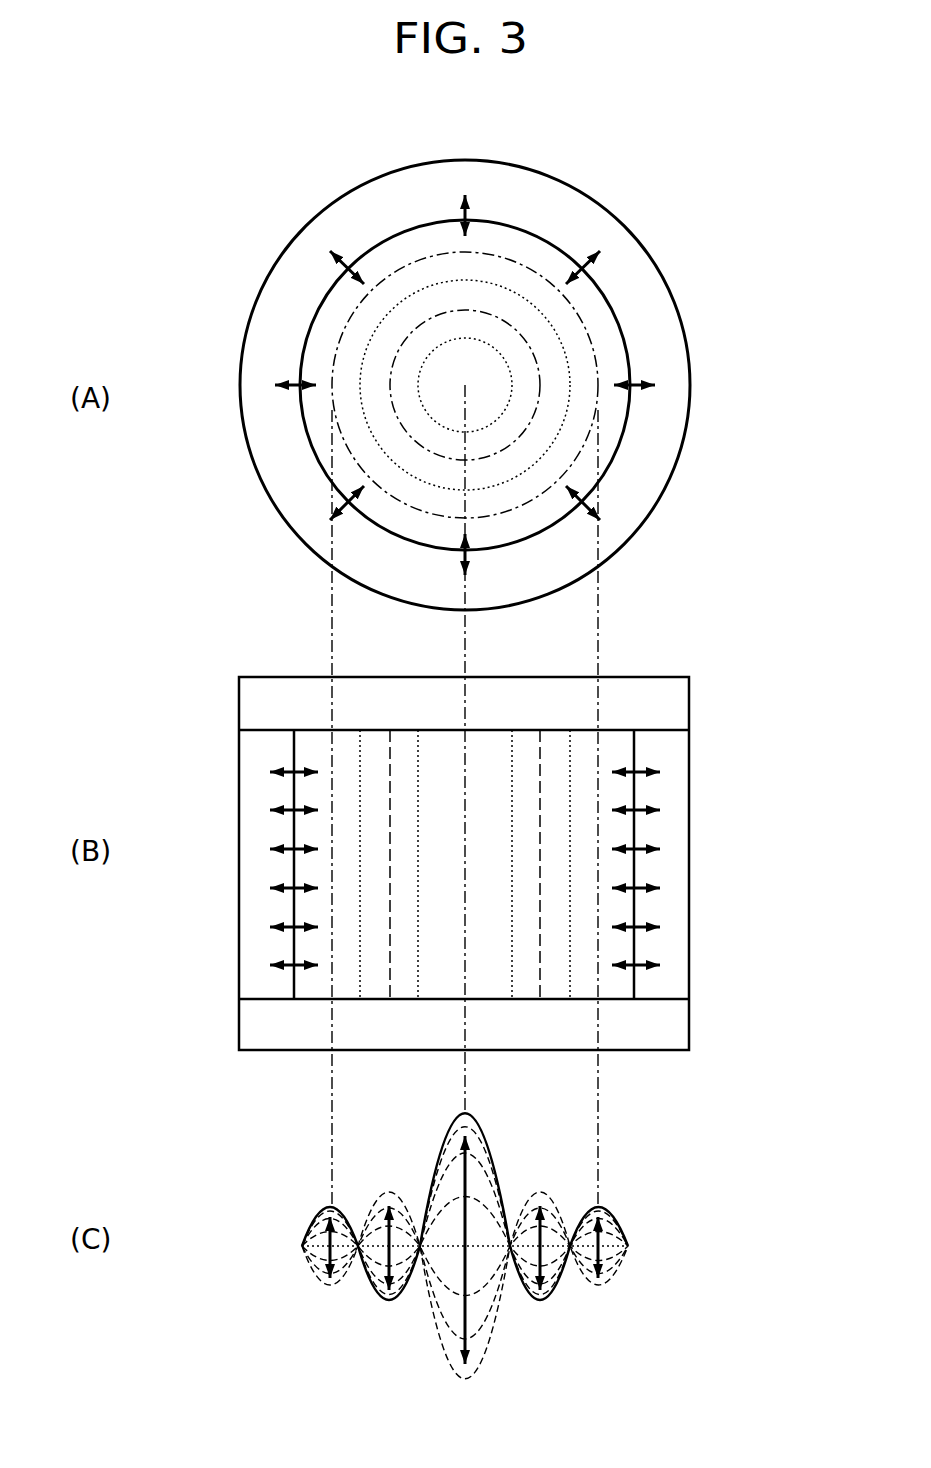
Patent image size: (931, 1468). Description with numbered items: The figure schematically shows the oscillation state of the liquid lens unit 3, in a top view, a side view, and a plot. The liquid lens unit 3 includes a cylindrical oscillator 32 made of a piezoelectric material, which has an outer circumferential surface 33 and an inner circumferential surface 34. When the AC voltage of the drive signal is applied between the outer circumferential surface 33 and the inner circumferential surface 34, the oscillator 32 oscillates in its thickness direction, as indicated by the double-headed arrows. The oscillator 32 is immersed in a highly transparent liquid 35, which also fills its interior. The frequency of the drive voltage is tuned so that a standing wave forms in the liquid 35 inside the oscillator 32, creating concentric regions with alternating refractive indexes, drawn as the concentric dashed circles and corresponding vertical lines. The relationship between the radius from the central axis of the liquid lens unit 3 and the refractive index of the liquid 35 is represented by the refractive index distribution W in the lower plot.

The liquid lens unit 3 is at (254, 210).
The oscillator 32 is at (527, 200).
The outer circumferential surface 33 is at (582, 195).
The inner circumferential surface 34 is at (550, 250).
The liquid 35 is at (550, 352).
The refractive index distribution W is at (330, 1207).